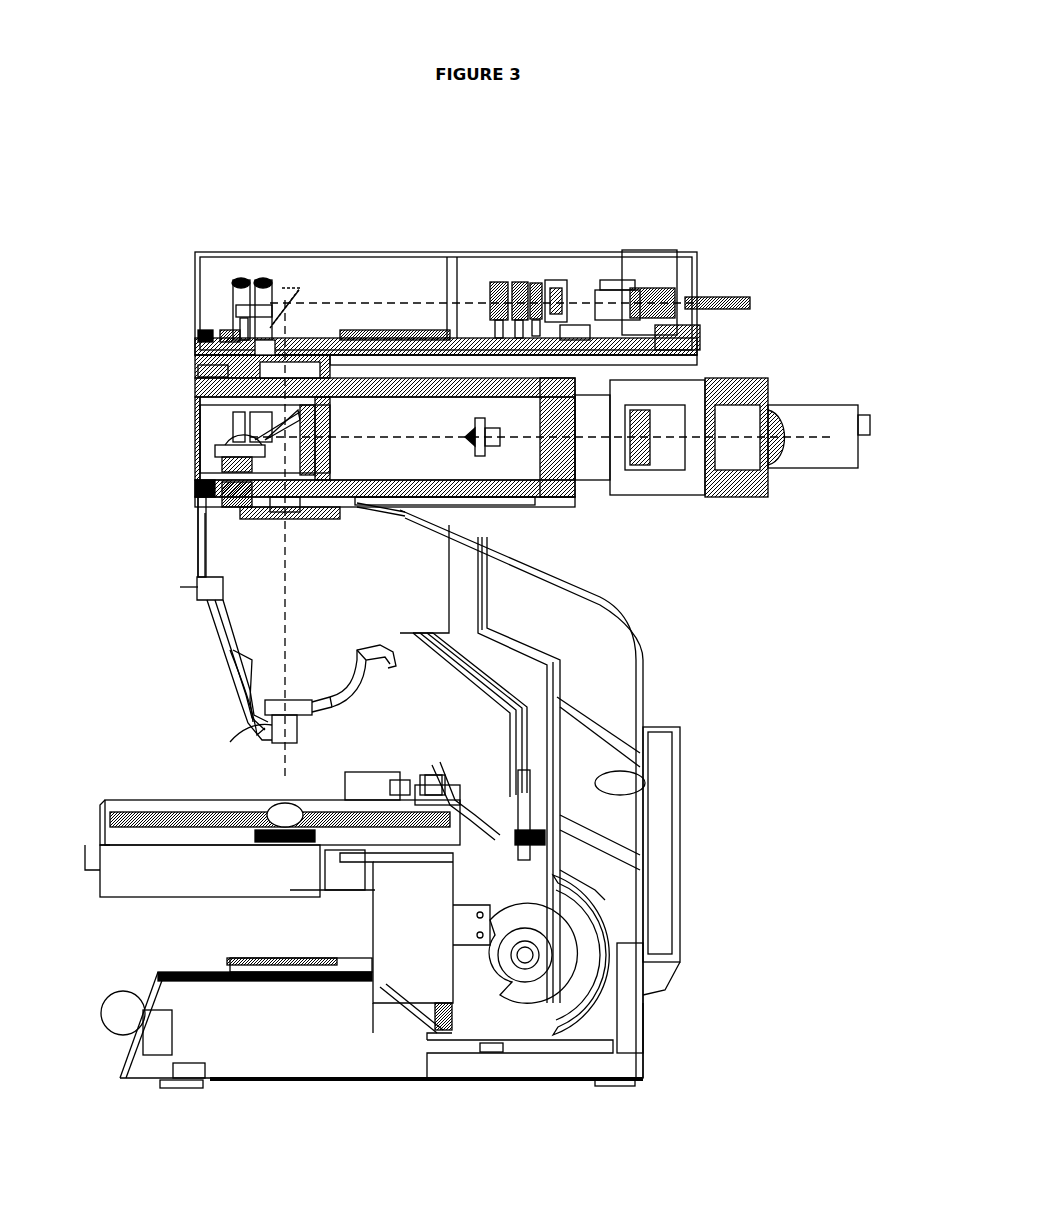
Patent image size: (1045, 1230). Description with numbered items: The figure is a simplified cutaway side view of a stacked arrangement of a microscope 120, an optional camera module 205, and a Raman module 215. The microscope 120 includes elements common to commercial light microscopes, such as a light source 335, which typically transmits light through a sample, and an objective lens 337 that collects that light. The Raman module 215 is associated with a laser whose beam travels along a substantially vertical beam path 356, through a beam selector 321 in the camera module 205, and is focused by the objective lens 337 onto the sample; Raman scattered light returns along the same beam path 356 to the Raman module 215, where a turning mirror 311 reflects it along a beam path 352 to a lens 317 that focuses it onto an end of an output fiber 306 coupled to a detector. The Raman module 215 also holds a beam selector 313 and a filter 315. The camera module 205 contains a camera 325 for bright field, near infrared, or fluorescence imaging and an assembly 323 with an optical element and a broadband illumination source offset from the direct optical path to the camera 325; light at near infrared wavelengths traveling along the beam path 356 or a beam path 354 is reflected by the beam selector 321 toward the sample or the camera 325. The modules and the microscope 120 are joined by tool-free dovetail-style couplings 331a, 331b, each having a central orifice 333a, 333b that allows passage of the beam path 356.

The microscope 120 is at (643, 700).
The camera module 205 is at (195, 415).
The Raman module 215 is at (195, 255).
The output fiber 306 is at (715, 290).
The turning mirror 311 is at (262, 290).
The beam selector 313 is at (500, 282).
The filter 315 is at (536, 283).
The lens 317 is at (560, 283).
The beam selector 321 is at (235, 457).
The assembly 323 is at (495, 455).
The camera 325 is at (810, 405).
The coupling 331a is at (200, 335).
The coupling 331b is at (240, 507).
The orifice 333a is at (200, 370).
The orifice 333b is at (290, 520).
The light source 335 is at (255, 968).
The objective lens 337 is at (272, 730).
The beam path 352 is at (345, 303).
The beam path 354 is at (480, 437).
The beam path 356 is at (283, 630).